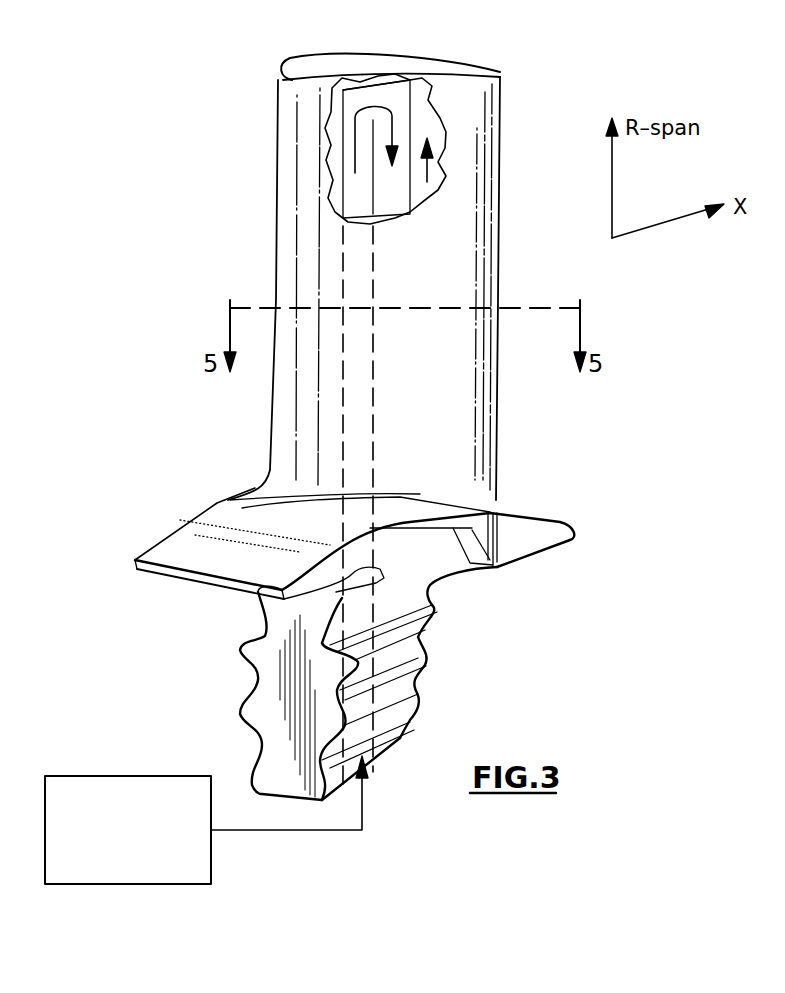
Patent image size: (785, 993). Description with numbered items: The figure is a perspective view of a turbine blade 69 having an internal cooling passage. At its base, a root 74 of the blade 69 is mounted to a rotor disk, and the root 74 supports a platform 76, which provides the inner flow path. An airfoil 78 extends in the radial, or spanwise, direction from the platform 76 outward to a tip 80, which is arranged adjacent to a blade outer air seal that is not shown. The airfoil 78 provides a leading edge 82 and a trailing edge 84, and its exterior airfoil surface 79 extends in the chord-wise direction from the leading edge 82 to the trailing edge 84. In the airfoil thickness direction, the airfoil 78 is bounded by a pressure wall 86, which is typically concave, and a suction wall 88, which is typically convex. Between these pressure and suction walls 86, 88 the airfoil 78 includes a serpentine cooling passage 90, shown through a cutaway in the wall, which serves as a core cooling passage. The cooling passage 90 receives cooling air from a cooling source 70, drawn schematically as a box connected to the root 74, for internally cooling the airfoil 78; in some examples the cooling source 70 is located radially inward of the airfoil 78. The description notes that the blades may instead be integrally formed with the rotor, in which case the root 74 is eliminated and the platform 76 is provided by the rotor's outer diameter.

The blade 69 is at (240, 242).
The cooling source 70 is at (120, 775).
The root 74 is at (282, 697).
The platform 76 is at (400, 516).
The airfoil 78 is at (383, 395).
The exterior airfoil surface 79 is at (460, 424).
The tip 80 is at (297, 62).
The leading edge 82 is at (276, 269).
The trailing edge 84 is at (500, 226).
The pressure wall 86 is at (418, 293).
The suction wall 88 is at (417, 48).
The serpentine cooling passage 90 is at (446, 167).